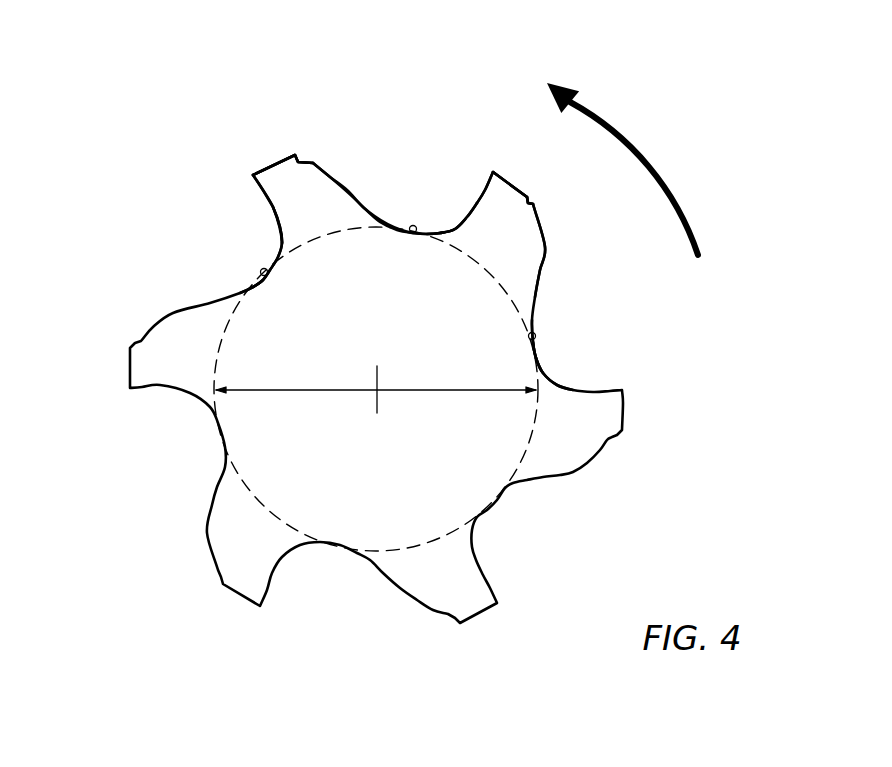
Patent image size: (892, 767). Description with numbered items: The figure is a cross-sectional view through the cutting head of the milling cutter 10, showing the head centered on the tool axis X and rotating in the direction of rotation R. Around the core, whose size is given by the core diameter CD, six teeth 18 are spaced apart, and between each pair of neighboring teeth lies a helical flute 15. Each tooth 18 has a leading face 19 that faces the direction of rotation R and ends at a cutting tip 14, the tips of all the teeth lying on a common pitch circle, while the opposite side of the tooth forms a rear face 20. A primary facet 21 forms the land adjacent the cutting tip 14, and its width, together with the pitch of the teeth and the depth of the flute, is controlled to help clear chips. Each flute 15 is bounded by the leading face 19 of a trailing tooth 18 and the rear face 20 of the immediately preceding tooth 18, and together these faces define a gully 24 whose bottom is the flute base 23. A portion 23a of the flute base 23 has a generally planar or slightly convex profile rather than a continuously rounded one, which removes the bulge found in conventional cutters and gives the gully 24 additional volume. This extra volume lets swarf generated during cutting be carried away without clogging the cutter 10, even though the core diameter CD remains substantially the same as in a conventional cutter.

The milling cutter 10 is at (136, 102).
The cutting tip 14 is at (252, 175).
The helical flute 15 is at (182, 240).
The tooth 18 is at (303, 220).
The leading face 19 is at (265, 192).
The rear face 20 is at (341, 180).
The primary facet 21 is at (272, 163).
The flute base 23 is at (243, 284).
The portion of the flute base 23a is at (267, 275).
The gully 24 is at (231, 260).
The direction of rotation R is at (640, 152).
The tool axis X is at (377, 392).
The core diameter CD is at (425, 391).